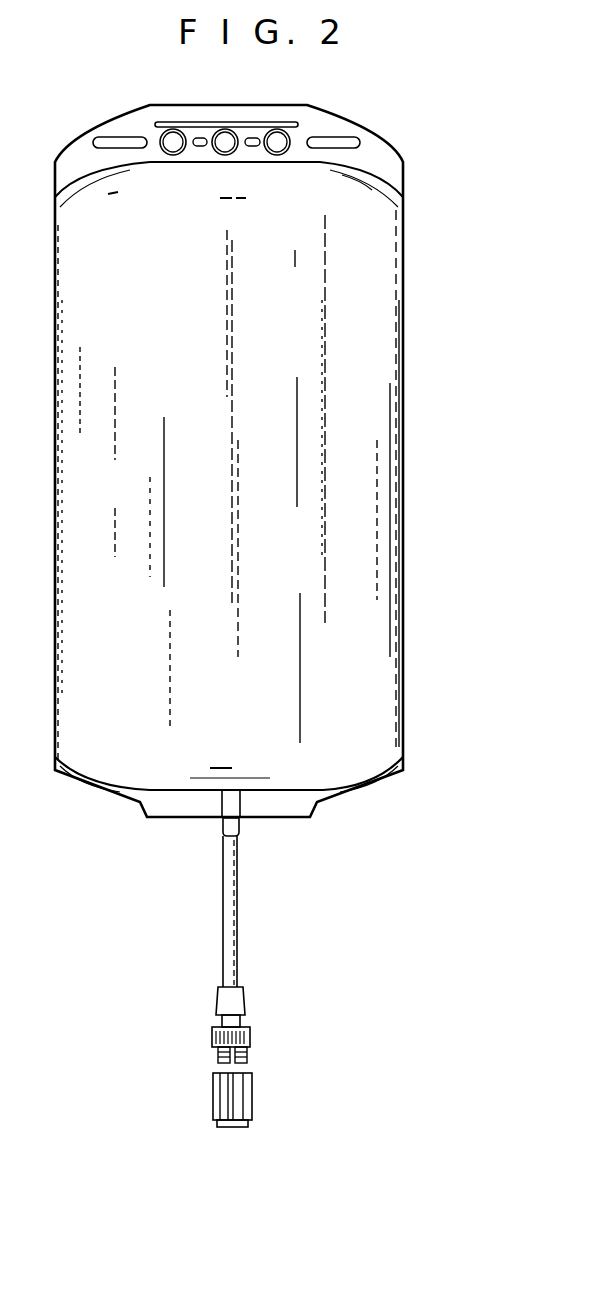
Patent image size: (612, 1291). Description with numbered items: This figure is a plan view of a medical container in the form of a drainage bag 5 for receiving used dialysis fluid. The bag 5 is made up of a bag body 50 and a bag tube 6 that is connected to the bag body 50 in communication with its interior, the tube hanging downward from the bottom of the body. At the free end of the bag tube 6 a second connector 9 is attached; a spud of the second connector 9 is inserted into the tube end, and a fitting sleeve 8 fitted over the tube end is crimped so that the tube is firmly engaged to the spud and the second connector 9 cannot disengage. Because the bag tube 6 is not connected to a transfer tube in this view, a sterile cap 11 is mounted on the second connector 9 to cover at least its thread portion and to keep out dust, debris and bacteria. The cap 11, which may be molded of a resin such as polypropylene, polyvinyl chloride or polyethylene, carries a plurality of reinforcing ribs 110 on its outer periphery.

The bag 5 is at (410, 308).
The bag body 50 is at (358, 513).
The bag tube 6 is at (228, 897).
The fitting sleeve 8 is at (225, 1000).
The second connector 9 is at (204, 1032).
The sterile cap 11 is at (230, 1100).
The reinforcing ribs 110 is at (215, 1087).